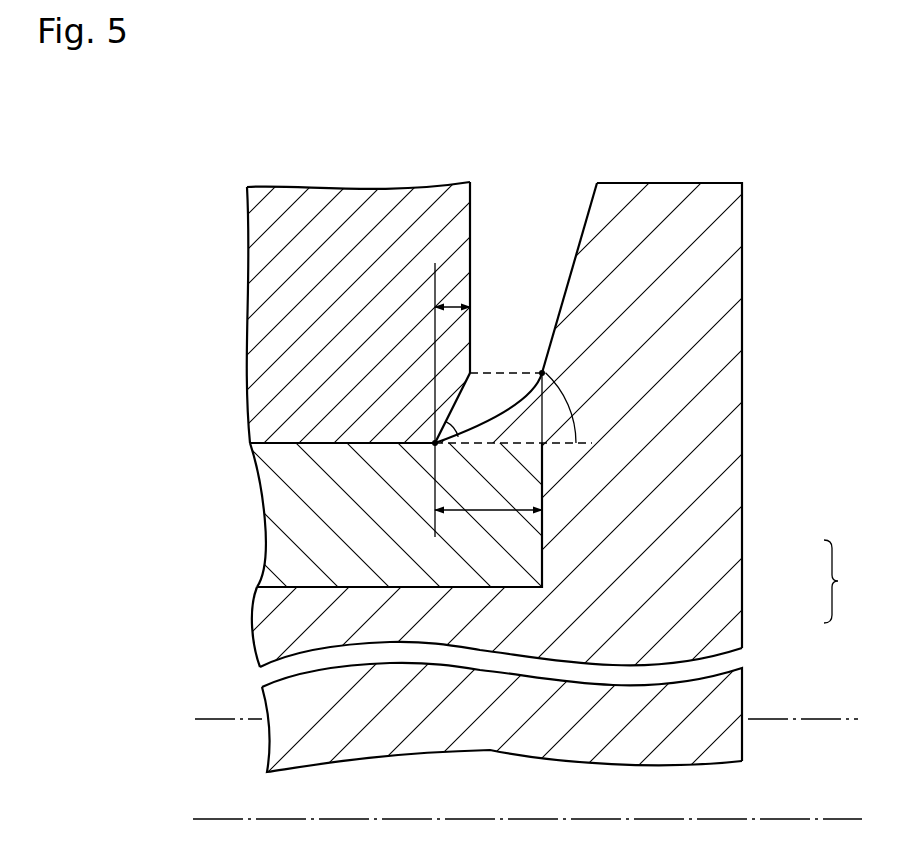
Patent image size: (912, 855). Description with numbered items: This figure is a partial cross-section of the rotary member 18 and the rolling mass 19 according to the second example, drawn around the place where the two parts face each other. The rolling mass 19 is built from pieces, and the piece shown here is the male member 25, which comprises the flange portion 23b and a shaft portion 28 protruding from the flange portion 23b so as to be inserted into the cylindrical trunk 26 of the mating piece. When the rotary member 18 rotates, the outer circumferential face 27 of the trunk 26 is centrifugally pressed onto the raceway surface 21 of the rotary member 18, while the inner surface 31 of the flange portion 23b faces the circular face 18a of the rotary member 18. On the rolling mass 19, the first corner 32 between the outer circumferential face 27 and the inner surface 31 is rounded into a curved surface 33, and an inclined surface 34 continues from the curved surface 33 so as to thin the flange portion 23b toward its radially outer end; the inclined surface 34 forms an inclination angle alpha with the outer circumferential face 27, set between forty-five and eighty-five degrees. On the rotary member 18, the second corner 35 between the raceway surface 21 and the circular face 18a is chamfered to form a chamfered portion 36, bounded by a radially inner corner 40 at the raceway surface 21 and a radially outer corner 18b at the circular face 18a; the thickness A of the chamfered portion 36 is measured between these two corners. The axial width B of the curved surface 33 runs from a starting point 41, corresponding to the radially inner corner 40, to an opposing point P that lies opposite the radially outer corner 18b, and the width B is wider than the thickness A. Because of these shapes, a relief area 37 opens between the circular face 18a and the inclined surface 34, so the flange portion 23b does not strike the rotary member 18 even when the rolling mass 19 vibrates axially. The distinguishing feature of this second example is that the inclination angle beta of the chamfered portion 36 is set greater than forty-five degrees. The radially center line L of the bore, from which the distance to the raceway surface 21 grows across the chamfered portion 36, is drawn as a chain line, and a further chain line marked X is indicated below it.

The rotary member 18 is at (397, 205).
The circular face 18a is at (472, 257).
The radially outer corner 18b is at (469, 372).
The relief area 37 is at (502, 193).
The rolling mass 19 is at (760, 158).
The inner surface 31 is at (573, 221).
The curved surface 33 is at (494, 420).
The inclined surface 34 is at (574, 250).
The first corner 32 is at (483, 446).
The opposing point P is at (542, 373).
The raceway surface 21 is at (379, 420).
The outer circumferential face 27 is at (290, 445).
The radially inner corner 40 is at (303, 492).
The starting point 41 is at (432, 448).
The trunk 26 is at (280, 567).
The chamfered portion 36 is at (430, 437).
The second corner 35 is at (432, 442).
The thickness of the chamfered portion A is at (452, 400).
The axial width of the curved surface B is at (488, 497).
The inclination angle of the inclined surface alpha is at (570, 408).
The inclination angle of the chamfered portion beta is at (459, 424).
The flange portion 23b is at (715, 554).
The male member 25 is at (847, 581).
The shaft portion 28 is at (480, 628).
The radially center line L is at (515, 719).
The axis X is at (515, 819).